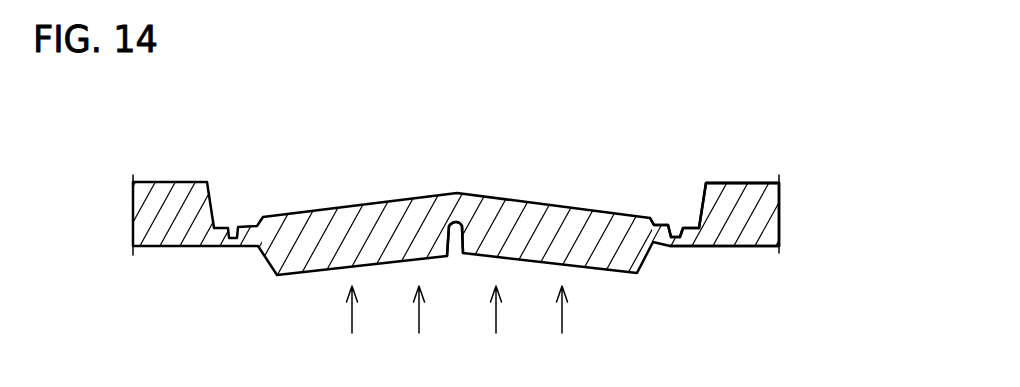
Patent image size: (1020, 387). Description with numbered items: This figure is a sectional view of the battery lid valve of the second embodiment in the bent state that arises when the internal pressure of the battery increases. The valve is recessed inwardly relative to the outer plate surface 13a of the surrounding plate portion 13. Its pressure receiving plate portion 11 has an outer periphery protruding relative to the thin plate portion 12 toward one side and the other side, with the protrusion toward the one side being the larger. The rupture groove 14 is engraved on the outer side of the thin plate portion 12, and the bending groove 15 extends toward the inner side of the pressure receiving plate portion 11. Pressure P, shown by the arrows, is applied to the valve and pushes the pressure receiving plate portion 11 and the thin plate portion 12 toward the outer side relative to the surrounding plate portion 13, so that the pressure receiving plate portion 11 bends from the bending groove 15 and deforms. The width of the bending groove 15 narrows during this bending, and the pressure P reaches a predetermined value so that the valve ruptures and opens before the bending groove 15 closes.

The pressure receiving plate portion 11 is at (413, 228).
The thin plate portion 12 is at (665, 225).
The surrounding plate portion 13 is at (763, 215).
The outer plate surface 13a is at (742, 184).
The rupture groove 14 is at (675, 230).
The bending groove 15 is at (453, 233).
The pressure P is at (350, 309).